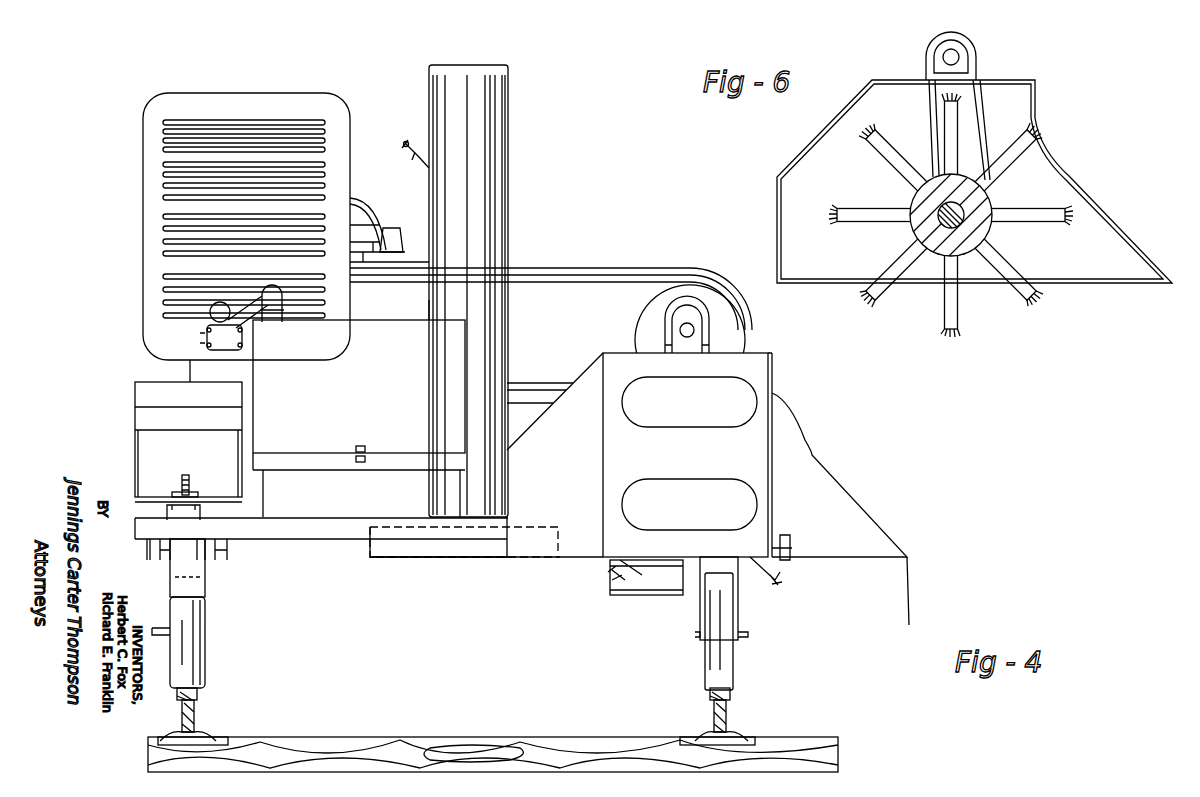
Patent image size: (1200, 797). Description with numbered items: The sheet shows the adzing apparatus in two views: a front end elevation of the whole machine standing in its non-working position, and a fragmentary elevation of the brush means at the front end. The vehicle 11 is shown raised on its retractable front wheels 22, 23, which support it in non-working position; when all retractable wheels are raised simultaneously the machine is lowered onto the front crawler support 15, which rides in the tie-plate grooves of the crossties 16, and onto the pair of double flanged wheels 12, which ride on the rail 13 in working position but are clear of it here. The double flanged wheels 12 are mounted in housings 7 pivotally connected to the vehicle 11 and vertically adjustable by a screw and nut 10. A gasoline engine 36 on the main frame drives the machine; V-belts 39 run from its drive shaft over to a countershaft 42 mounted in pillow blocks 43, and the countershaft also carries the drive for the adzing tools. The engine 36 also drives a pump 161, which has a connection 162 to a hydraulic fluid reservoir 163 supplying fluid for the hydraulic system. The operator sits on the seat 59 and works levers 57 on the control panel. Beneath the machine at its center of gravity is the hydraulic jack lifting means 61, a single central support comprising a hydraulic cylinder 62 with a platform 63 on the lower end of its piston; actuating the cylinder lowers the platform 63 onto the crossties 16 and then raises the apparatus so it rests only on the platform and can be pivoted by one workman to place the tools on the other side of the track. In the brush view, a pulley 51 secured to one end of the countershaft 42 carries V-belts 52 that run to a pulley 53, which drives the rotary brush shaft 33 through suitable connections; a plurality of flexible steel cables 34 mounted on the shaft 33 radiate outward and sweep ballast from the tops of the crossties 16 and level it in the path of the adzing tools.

In FIG. 4, the housings 7 is at (228, 553).
In FIG. 4, the nut 10 is at (192, 492).
In FIG. 4, the vehicle 11 is at (133, 447).
In FIG. 4, the double flanged wheels 12 is at (200, 575).
In FIG. 4, the rail 13 is at (196, 716).
In FIG. 4, the front crawler support 15 is at (640, 598).
In FIG. 4, the crossties 16 is at (450, 742).
In FIG. 4, the retractable front wheel 22 is at (200, 670).
In FIG. 4, the retractable front wheel 23 is at (740, 672).
In FIG. 6, the rotary shaft 33 is at (975, 195).
In FIG. 6, the flexible steel cables 34 is at (908, 160).
In FIG. 4, the gasoline engine 36 is at (178, 100).
In FIG. 4, the V-belts 39 is at (565, 270).
In FIG. 4, the countershaft 42 is at (687, 338).
In FIG. 4, the pillow blocks 43 is at (706, 352).
In FIG. 4, the pulley 51 is at (698, 314).
In FIG. 6, the pulley 51 is at (968, 45).
In FIG. 4, the V-belts 52 is at (722, 338).
In FIG. 6, the V-belts 52 is at (980, 75).
In FIG. 6, the pulley 53 is at (965, 233).
In FIG. 4, the levers 57 is at (412, 140).
In FIG. 4, the seat 59 is at (390, 226).
In FIG. 4, the hydraulic jack lifting means 61 is at (510, 112).
In FIG. 4, the hydraulic cylinder 62 is at (451, 307).
In FIG. 4, the platform 63 is at (420, 558).
In FIG. 4, the pump 161 is at (203, 342).
In FIG. 4, the connection 162 is at (245, 326).
In FIG. 4, the hydraulic fluid reservoir 163 is at (385, 396).